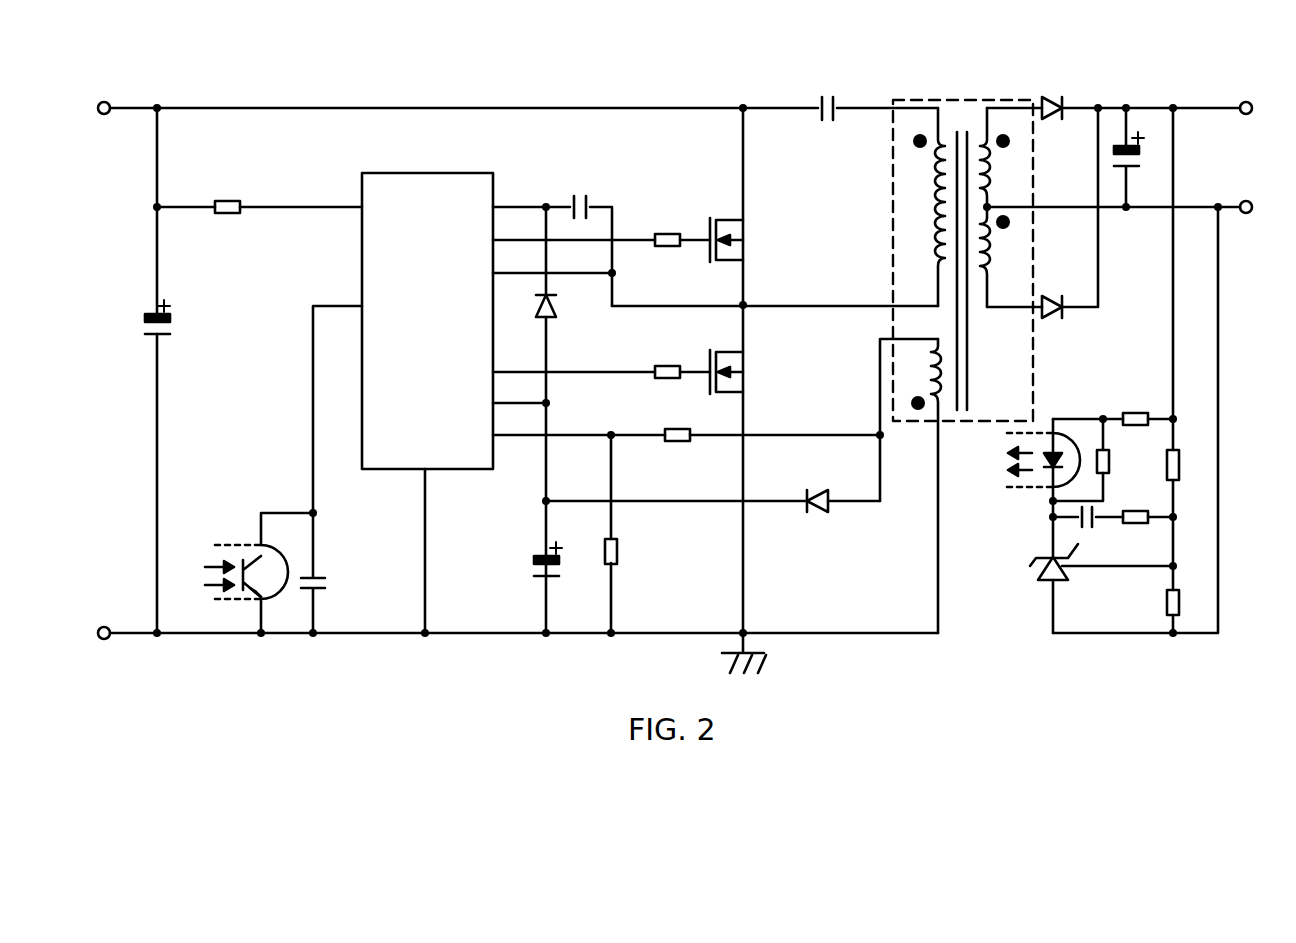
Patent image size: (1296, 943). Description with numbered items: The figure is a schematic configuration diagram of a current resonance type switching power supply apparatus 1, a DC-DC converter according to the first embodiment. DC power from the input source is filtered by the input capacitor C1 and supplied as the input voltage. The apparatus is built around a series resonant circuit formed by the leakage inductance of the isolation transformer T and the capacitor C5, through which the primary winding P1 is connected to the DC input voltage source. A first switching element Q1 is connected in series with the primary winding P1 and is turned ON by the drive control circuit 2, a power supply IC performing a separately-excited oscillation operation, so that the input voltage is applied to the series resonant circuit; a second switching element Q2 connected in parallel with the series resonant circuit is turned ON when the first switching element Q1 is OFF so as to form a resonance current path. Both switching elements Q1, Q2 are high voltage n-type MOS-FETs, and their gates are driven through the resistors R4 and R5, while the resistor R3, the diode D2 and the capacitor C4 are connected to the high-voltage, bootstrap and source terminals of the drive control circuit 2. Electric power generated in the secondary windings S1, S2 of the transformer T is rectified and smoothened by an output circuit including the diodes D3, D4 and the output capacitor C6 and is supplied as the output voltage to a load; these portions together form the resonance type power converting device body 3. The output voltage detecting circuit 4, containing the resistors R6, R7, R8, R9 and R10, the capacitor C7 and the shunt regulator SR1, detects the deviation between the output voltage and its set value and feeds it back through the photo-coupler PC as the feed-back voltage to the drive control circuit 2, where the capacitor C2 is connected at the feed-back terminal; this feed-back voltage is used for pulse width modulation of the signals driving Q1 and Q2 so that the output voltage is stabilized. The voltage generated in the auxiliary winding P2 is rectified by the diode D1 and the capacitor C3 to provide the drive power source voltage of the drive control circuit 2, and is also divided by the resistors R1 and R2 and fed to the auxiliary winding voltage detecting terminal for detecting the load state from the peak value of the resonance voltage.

The switching power supply apparatus 1 is at (1094, 60).
The drive control circuit 2 is at (419, 206).
The resonance type power converting device body 3 is at (840, 140).
The output voltage detecting circuit 4 is at (1176, 516).
The input capacitor C1 is at (173, 317).
The capacitor C2 is at (323, 573).
The capacitor C3 is at (529, 559).
The capacitor C4 is at (552, 241).
The capacitor C5 is at (819, 98).
The output capacitor C6 is at (1141, 157).
The capacitor C7 is at (1088, 526).
The resistor R1 is at (686, 455).
The resistor R2 is at (624, 534).
The resistor R3 is at (259, 195).
The resistor R4 is at (601, 229).
The resistor R5 is at (601, 361).
The resistor R6 is at (1094, 460).
The resistor R7 is at (1148, 508).
The resistor R8 is at (1113, 410).
The resistor R9 is at (1184, 465).
The resistor R10 is at (1189, 602).
The diode D1 is at (713, 490).
The diode D2 is at (560, 420).
The diode D3 is at (1053, 97).
The diode D4 is at (1042, 228).
The first switching element Q1 is at (743, 372).
The second switching element Q2 is at (743, 370).
The isolation transformer T is at (963, 352).
The primary winding P1 is at (923, 207).
The auxiliary winding P2 is at (921, 486).
The secondary winding S1 is at (1001, 157).
The secondary winding S2 is at (1001, 257).
The photo-coupler PC is at (642, 526).
The shunt regulator SR1 is at (1084, 567).